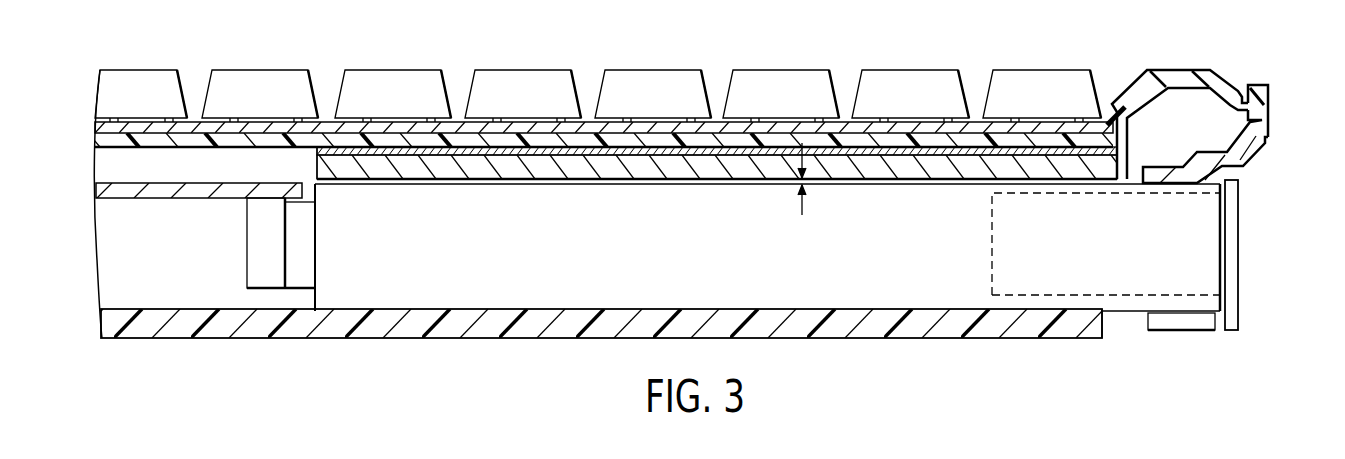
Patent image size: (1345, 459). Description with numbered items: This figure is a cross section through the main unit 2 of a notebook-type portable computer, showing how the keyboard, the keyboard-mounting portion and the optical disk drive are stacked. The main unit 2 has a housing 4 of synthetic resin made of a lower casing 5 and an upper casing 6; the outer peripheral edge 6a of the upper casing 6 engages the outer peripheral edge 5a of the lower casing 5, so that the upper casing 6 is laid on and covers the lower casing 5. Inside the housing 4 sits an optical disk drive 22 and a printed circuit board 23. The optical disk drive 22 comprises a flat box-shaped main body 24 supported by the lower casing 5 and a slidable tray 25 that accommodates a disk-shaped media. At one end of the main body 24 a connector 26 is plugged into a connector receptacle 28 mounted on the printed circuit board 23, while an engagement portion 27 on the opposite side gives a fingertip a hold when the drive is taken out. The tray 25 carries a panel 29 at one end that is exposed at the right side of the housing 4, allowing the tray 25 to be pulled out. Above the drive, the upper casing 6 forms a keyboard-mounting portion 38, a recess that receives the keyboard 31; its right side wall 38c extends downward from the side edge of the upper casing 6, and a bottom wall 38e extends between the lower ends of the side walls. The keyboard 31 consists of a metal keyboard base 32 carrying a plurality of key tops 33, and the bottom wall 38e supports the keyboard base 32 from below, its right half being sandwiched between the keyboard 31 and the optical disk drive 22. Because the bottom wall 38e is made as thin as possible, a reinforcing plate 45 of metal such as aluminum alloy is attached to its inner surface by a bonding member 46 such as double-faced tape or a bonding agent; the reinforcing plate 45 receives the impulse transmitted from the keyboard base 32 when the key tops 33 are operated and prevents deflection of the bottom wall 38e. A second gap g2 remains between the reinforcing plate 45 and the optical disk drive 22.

The main unit 2 is at (306, 340).
The housing 4 is at (1224, 79).
The lower casing 5 is at (572, 322).
The outer peripheral edge 5a is at (1265, 154).
The upper casing 6 is at (1176, 84).
The outer peripheral edge 6a is at (1264, 98).
The optical disk drive 22 is at (873, 290).
The printed circuit board 23 is at (163, 188).
The main body 24 is at (462, 295).
The tray 25 is at (1133, 285).
The connector 26 is at (316, 256).
The engagement portion 27 is at (1192, 326).
The connector receptacle 28 is at (258, 267).
The panel 29 is at (1236, 250).
The keyboard 31 is at (925, 67).
The keyboard base 32 is at (667, 140).
The key tops 33 is at (359, 80).
The keyboard-mounting portion 38 is at (718, 127).
The right side wall 38c is at (1103, 114).
The bottom wall 38e is at (512, 140).
The reinforcing plate 45 is at (917, 172).
The bonding member 46 is at (433, 156).
The second gap g2 is at (800, 182).